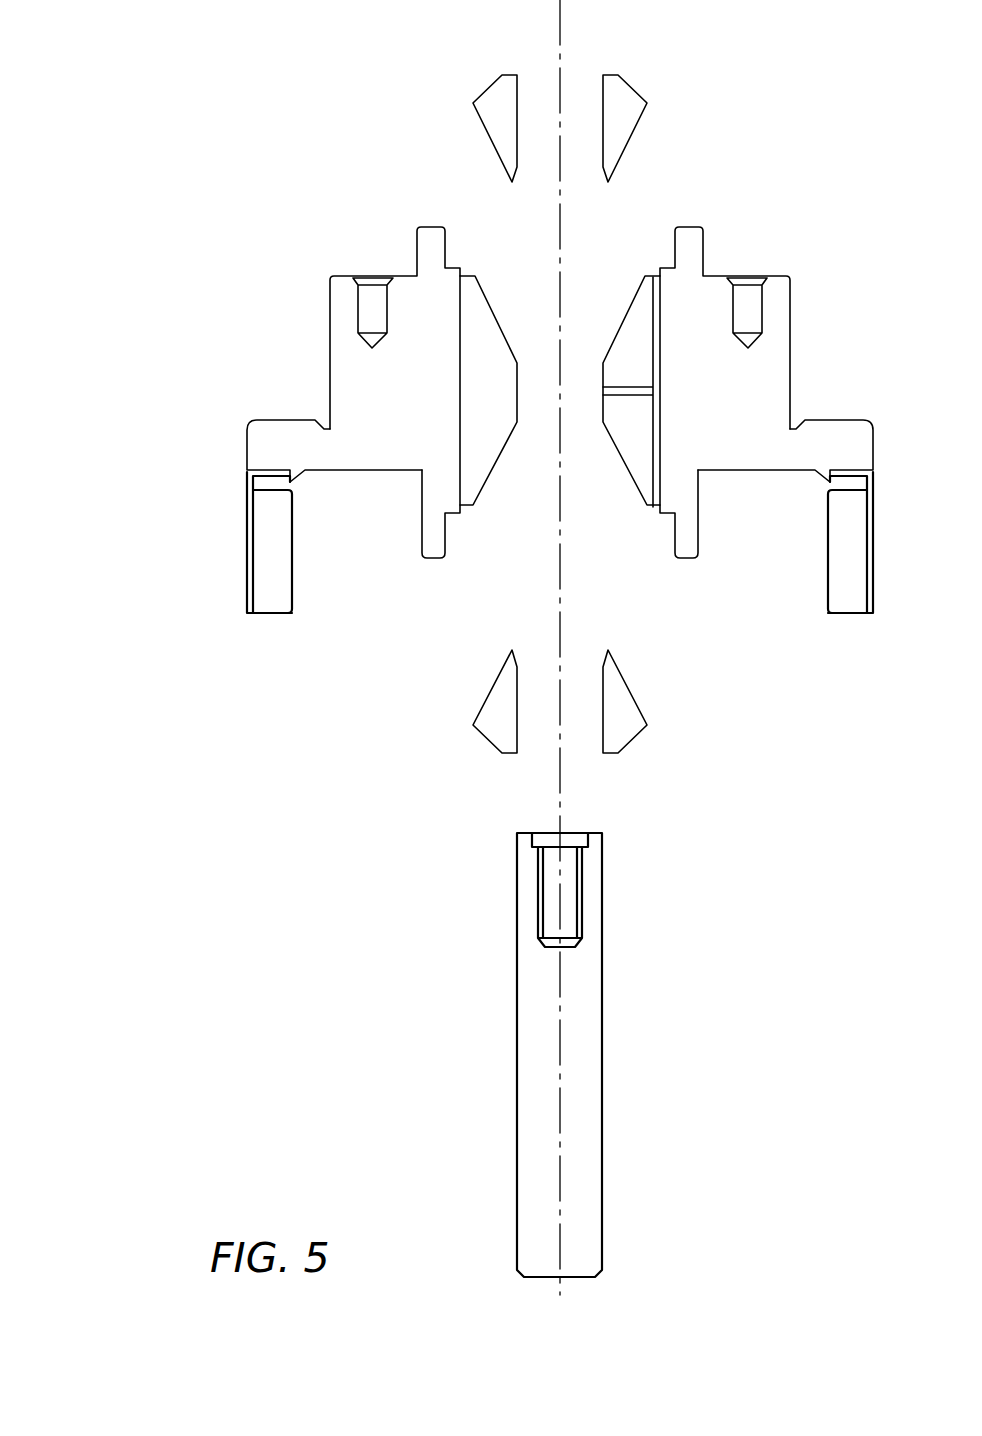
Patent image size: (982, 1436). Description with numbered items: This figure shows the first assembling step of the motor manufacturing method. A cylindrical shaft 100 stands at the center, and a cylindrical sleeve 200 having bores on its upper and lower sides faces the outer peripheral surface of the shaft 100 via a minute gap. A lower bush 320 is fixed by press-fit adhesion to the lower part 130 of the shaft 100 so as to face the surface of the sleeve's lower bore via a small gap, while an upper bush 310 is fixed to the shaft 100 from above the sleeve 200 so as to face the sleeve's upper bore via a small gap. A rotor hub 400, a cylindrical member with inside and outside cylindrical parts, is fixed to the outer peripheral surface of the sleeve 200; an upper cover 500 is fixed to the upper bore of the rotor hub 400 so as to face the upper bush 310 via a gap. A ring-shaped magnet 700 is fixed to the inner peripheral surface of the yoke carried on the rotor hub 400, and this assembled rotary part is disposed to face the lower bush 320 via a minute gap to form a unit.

The shaft 100 is at (650, 1025).
The lower part 130 is at (580, 1175).
The sleeve 200 is at (477, 328).
The upper bush 310 is at (623, 118).
The lower bush 320 is at (623, 723).
The rotor hub 400 is at (365, 382).
The upper cover 500 is at (250, 512).
The magnet 700 is at (267, 577).